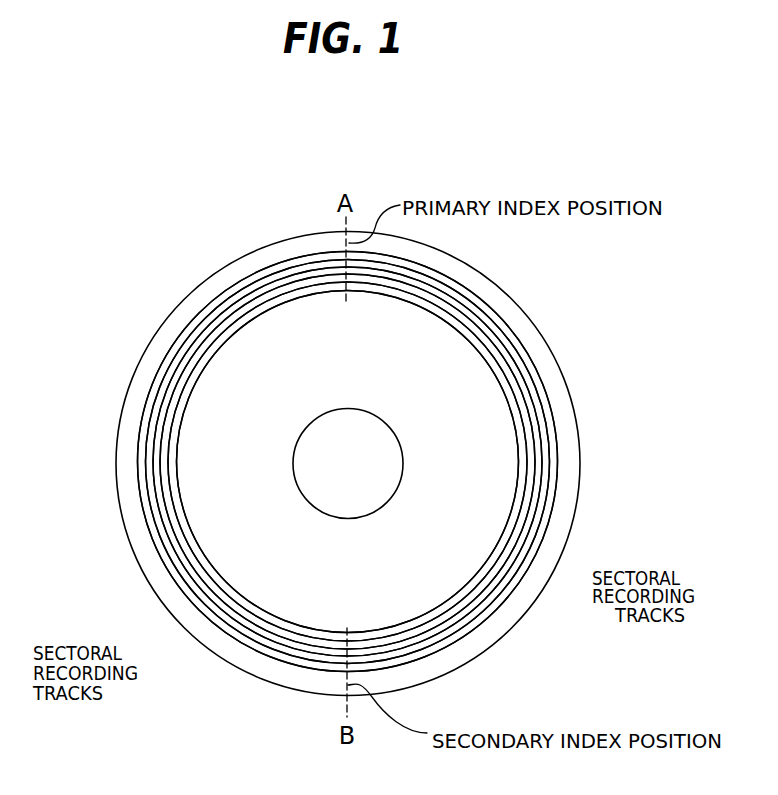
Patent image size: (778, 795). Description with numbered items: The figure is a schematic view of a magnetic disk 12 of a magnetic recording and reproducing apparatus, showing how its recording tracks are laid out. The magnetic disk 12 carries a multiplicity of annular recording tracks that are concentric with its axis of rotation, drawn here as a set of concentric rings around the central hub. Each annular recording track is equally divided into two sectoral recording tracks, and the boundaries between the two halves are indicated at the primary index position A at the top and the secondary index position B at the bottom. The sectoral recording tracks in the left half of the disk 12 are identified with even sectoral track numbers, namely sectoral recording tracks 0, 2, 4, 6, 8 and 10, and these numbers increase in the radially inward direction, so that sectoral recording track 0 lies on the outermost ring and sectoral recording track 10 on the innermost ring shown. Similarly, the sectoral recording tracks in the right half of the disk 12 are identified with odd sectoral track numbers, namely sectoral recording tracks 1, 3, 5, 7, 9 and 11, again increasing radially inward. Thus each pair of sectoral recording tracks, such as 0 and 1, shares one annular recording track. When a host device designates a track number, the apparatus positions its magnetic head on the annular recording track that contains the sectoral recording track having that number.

The sectoral recording track 0 is at (216, 629).
The sectoral recording track 1 is at (526, 577).
The sectoral recording track 2 is at (240, 636).
The sectoral recording track 3 is at (508, 589).
The sectoral recording track 4 is at (261, 639).
The sectoral recording track 5 is at (490, 599).
The sectoral recording track 6 is at (281, 640).
The sectoral recording track 7 is at (470, 607).
The sectoral recording track 8 is at (302, 638).
The sectoral recording track 9 is at (448, 614).
The sectoral recording track 10 is at (318, 633).
The sectoral recording track 11 is at (433, 613).
The magnetic disk 12 is at (528, 328).